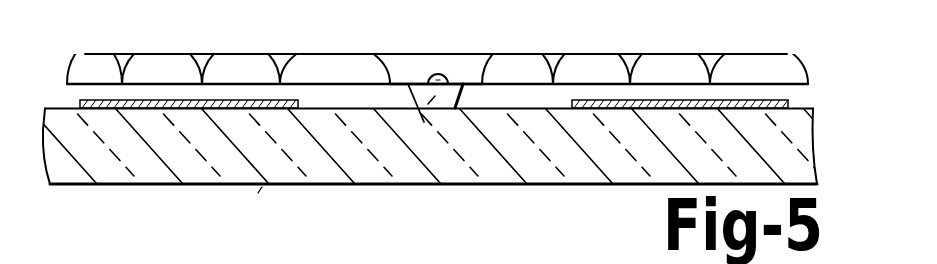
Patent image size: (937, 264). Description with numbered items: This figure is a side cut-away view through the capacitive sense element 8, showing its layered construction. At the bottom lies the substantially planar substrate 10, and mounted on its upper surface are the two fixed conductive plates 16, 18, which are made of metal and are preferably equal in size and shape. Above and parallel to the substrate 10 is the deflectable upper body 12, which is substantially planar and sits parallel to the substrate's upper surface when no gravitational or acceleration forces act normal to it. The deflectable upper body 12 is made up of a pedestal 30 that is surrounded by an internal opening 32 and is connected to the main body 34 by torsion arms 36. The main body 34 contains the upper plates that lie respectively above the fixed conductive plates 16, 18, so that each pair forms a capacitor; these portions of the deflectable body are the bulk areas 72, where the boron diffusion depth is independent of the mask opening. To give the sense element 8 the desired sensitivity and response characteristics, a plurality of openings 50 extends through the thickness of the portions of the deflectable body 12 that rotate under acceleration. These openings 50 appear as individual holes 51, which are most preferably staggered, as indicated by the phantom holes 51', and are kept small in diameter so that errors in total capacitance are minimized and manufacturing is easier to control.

The sense element 8 is at (450, 45).
The substrate 10 is at (810, 150).
The deflectable upper body 12 is at (73, 60).
The fixed conductive plate 16 is at (88, 100).
The fixed conductive plate 18 is at (792, 100).
The pedestal 30 is at (433, 97).
The internal opening 32 is at (475, 67).
The main body 34 is at (256, 196).
The torsion arms 36 is at (438, 72).
The plurality of openings 50 is at (435, 45).
The individual holes 51 is at (366, 48).
The phantom holes 51' is at (480, 45).
The bulk areas 72 is at (240, 205).